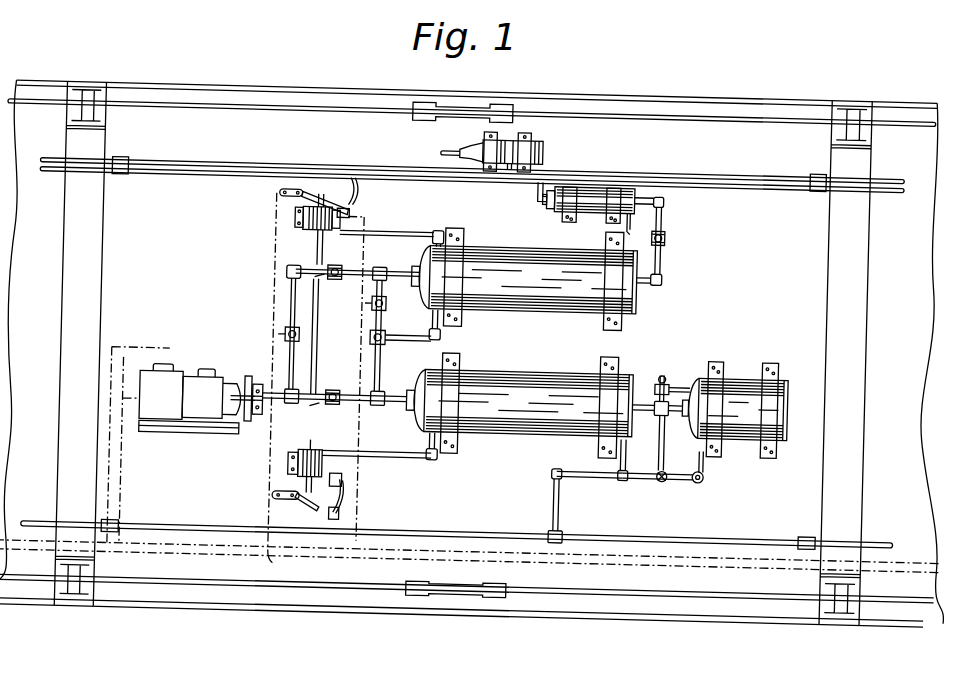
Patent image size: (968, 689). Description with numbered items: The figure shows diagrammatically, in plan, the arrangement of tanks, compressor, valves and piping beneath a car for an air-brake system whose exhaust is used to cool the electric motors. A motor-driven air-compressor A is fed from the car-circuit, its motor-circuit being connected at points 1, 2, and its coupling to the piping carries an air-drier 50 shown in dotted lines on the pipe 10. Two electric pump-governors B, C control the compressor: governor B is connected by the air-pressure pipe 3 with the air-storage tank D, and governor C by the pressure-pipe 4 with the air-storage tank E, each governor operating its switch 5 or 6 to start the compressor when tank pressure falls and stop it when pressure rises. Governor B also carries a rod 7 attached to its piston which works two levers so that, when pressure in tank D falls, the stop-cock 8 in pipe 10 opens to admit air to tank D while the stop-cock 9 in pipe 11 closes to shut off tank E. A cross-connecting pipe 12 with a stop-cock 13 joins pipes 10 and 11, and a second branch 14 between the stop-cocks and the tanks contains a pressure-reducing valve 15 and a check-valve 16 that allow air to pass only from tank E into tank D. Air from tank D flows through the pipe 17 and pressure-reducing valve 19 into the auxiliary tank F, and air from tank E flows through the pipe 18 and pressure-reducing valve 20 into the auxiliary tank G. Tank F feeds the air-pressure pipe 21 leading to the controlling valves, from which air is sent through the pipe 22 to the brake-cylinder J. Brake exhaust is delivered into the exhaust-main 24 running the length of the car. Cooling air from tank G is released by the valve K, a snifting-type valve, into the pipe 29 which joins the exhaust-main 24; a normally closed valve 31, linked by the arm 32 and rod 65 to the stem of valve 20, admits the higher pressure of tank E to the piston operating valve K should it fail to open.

The connection point 1 is at (108, 552).
The connection point 2 is at (316, 386).
The air-pressure pipe 3 is at (391, 229).
The pressure-pipe 4 is at (401, 460).
The switch 5 is at (352, 211).
The switch 6 is at (307, 498).
The rod 7 is at (318, 337).
The stop-cock 8 is at (328, 280).
The stop-cock 9 is at (324, 388).
The pipe 10 is at (356, 269).
The pipe 11 is at (358, 408).
The cross-connecting pipe 12 is at (285, 306).
The stop-cock 13 is at (285, 346).
The cross-connecting branch pipe 14 is at (382, 366).
The pressure-reducing valve 15 is at (370, 341).
The check-valve 16 is at (385, 307).
The pipe 17 is at (661, 256).
The pipe 18 is at (641, 398).
The pressure-reducing valve 19 is at (663, 234).
The pressure-reducing valve 20 is at (668, 380).
The air-pressure pipe 21 is at (723, 184).
The pipe 22 is at (705, 163).
The exhaust-main 24 is at (478, 525).
The pipe 29 is at (611, 478).
The valve 31 is at (668, 476).
The arm 32 is at (668, 467).
The air-drier 50 is at (233, 427).
The rod 65 is at (675, 443).
The motor-driven air-compressor A is at (188, 390).
The electric pump-governor B is at (314, 231).
The electric pump-governor C is at (305, 453).
The air-storage tank D is at (510, 246).
The air-storage tank E is at (518, 377).
The auxiliary tank F is at (591, 210).
The auxiliary tank G is at (740, 374).
The brake-cylinder J is at (539, 151).
The valve K is at (707, 477).